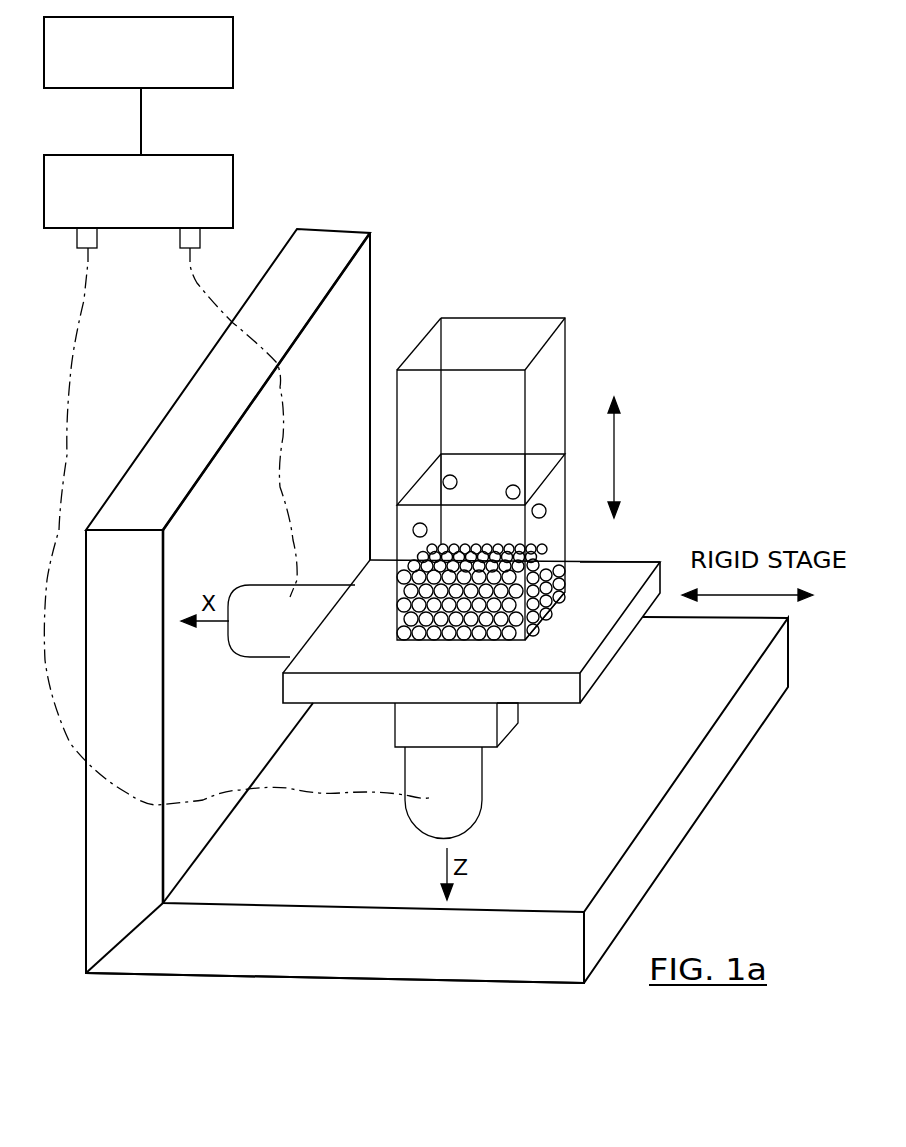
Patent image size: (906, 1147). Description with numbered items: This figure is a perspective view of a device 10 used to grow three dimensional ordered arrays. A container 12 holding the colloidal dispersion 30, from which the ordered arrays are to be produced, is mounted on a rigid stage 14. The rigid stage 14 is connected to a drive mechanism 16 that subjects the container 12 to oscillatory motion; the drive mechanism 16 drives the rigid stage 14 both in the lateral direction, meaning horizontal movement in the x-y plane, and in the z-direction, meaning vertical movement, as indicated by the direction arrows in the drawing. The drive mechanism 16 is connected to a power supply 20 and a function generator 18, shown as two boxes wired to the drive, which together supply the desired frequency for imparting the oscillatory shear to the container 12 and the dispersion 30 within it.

The device 10 is at (680, 160).
The container 12 is at (523, 317).
The rigid stage 14 is at (608, 648).
The drive mechanism 16 is at (497, 722).
The function generator 18 is at (233, 66).
The power supply 20 is at (233, 195).
The colloidal dispersion 30 is at (555, 493).